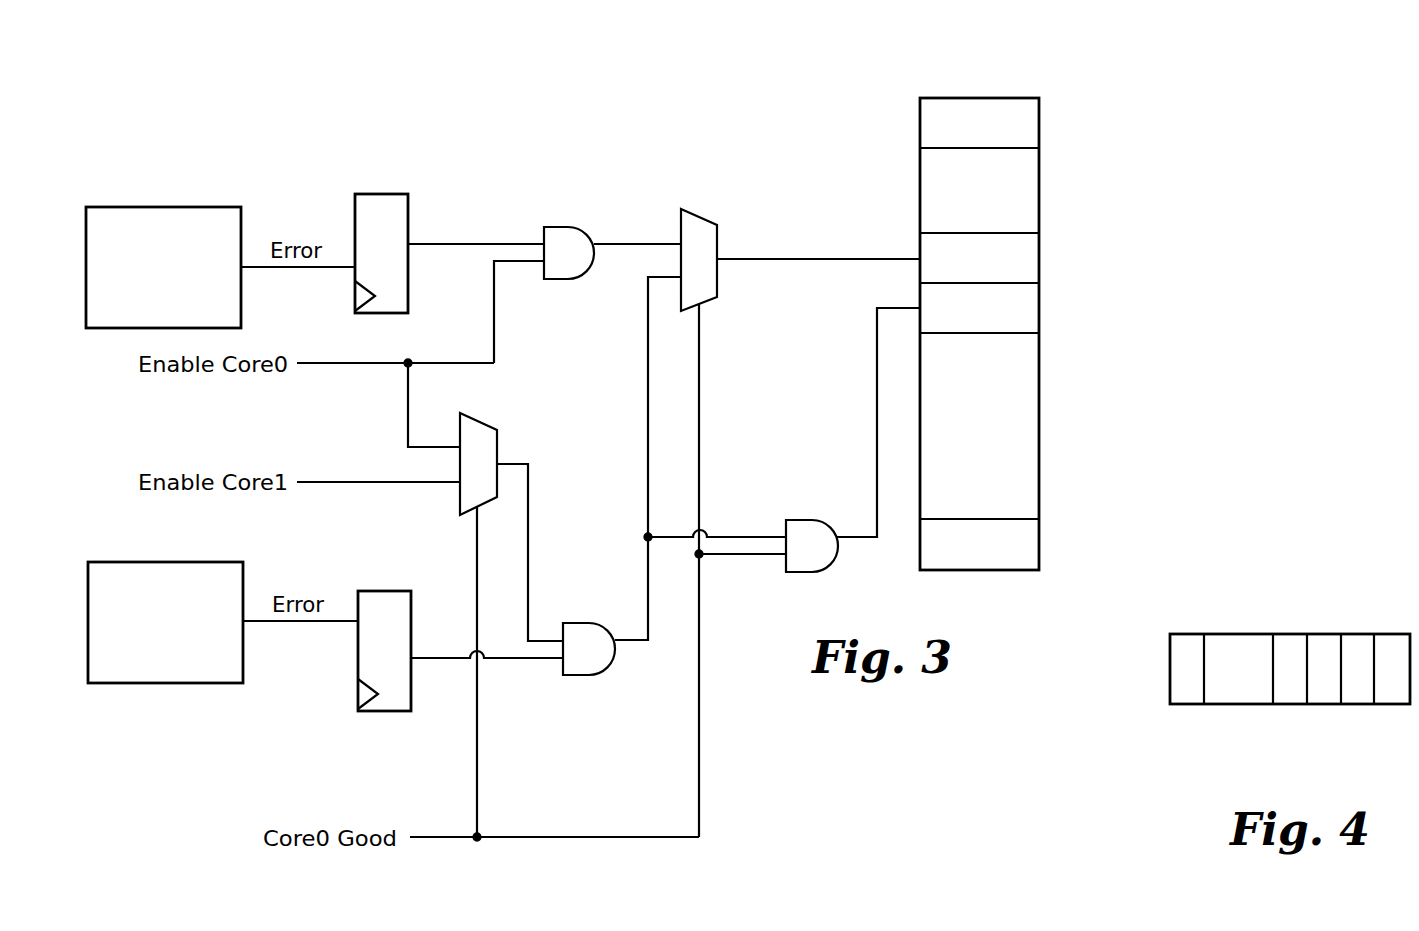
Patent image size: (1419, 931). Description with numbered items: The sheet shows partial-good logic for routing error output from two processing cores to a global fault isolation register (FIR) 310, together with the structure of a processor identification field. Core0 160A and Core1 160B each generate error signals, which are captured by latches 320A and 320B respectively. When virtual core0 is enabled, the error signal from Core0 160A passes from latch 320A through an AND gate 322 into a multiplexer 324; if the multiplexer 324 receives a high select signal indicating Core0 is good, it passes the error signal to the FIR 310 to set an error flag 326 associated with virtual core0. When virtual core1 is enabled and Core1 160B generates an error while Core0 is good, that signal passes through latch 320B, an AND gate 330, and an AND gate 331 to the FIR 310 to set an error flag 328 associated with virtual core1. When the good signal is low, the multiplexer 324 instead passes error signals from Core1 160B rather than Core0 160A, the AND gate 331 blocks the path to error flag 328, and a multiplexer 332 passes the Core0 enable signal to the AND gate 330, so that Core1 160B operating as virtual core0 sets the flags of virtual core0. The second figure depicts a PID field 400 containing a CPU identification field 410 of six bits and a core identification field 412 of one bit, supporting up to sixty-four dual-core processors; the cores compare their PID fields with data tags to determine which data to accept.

In FIG. 3, the Core0 160A is at (211, 207).
In FIG. 3, the Core1 160B is at (213, 562).
In FIG. 3, the latch 320A is at (388, 194).
In FIG. 3, the latch 320B is at (390, 591).
In FIG. 3, the AND gate 322 is at (569, 227).
In FIG. 3, the multiplexer 324 is at (699, 216).
In FIG. 3, the error flag 326 is at (1030, 255).
In FIG. 3, the error flag 328 is at (1030, 305).
In FIG. 3, the global fault isolation register 310 is at (880, 78).
In FIG. 3, the AND gate 330 is at (600, 675).
In FIG. 3, the AND gate 331 is at (816, 520).
In FIG. 3, the multiplexer 332 is at (480, 421).
In FIG. 4, the PID field 400 is at (1409, 620).
In FIG. 4, the CPU identification field 410 is at (1373, 716).
In FIG. 4, the core identification field 412 is at (1408, 716).